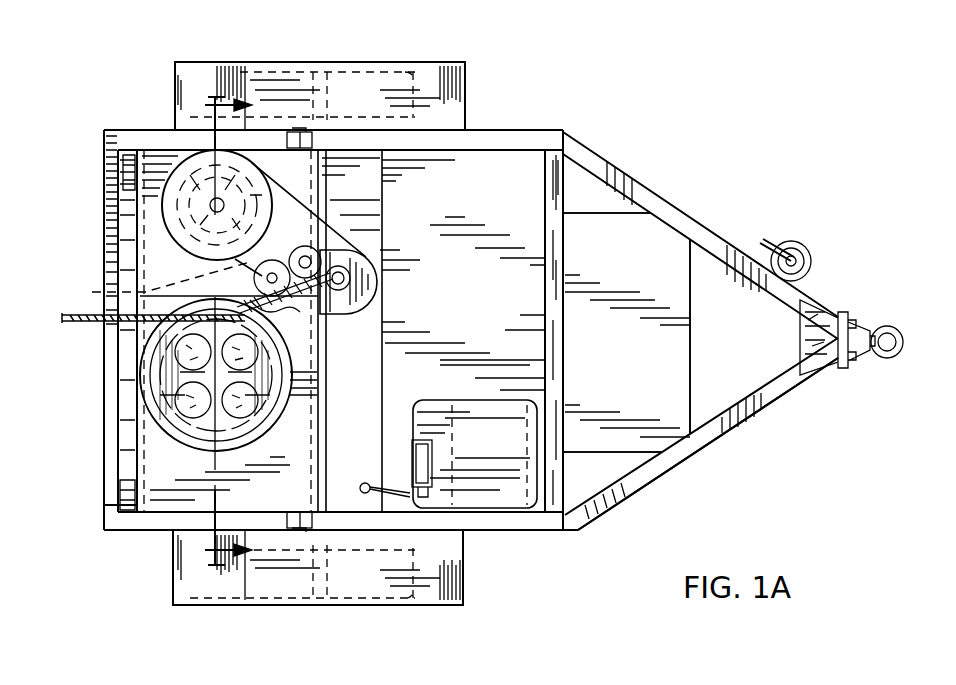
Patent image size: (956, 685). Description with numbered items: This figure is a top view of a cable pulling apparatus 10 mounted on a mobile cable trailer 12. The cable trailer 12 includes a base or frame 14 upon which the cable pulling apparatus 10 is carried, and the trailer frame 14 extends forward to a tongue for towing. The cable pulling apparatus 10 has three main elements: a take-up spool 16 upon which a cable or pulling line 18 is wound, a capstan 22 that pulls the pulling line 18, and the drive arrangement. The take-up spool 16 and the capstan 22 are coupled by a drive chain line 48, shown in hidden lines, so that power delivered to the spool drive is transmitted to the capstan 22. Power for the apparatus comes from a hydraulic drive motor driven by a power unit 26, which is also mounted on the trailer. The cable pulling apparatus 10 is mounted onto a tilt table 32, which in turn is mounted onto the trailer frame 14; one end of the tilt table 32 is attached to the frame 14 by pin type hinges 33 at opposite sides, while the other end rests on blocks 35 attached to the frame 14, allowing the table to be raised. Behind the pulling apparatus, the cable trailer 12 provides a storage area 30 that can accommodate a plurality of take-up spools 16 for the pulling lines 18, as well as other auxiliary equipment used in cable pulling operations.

The cable pulling apparatus 10 is at (162, 460).
The mobile cable trailer 12 is at (655, 122).
The base or frame 14 is at (625, 487).
The take-up spool 16 is at (182, 242).
The pulling line 18 is at (88, 323).
The capstan 22 is at (153, 397).
The power unit 26 is at (498, 417).
The storage area 30 is at (648, 391).
The tilt table 32 is at (147, 458).
The pin type hinges 33 is at (293, 133).
The blocks 35 is at (131, 150).
The drive chain line 48 is at (152, 285).